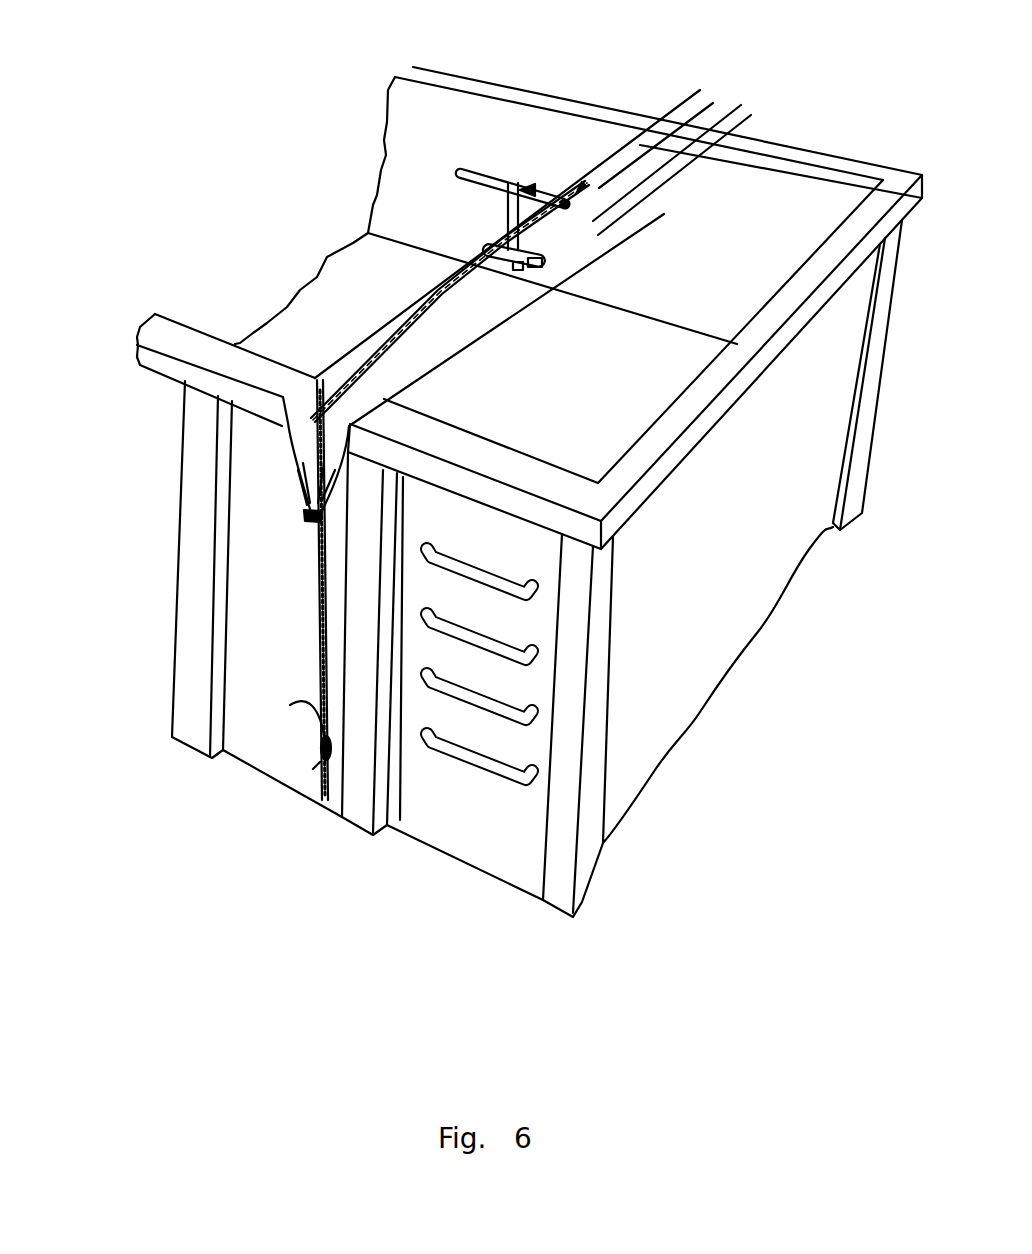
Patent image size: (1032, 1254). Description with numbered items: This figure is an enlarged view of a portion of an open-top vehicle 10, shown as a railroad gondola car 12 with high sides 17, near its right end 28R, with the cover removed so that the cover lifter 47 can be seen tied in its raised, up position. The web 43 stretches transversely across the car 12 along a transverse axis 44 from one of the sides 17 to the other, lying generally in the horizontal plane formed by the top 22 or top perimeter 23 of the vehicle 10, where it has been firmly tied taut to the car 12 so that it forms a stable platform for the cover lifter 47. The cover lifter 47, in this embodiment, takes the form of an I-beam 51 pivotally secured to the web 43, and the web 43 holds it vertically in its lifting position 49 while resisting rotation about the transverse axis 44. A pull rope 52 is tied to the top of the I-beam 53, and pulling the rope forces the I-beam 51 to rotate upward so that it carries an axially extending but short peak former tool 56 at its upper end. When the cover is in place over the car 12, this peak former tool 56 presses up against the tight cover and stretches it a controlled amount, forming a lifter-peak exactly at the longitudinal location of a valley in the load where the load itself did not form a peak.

The open-top vehicle 10 is at (258, 786).
The gondola car 12 is at (426, 826).
The sides 17 is at (452, 102).
The top 22 is at (508, 88).
The top perimeter 23 is at (536, 487).
The right end 28R is at (735, 438).
The web 43 is at (722, 162).
The transverse axis 44 is at (694, 108).
The cover lifter 47 is at (502, 164).
The lifting position 49 is at (502, 197).
The I-beam 51 is at (518, 242).
The pull rope 52 is at (437, 295).
The top of the I-beam 53 is at (507, 207).
The peak former tool 56 is at (493, 176).